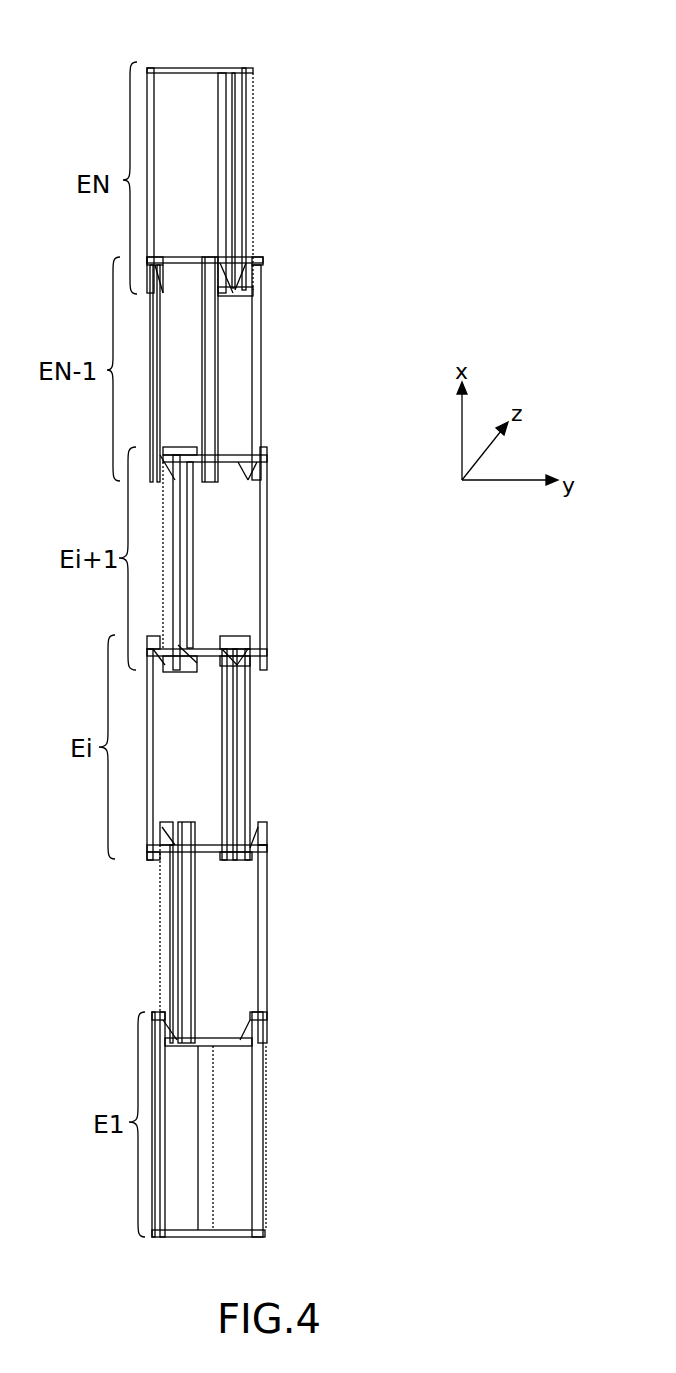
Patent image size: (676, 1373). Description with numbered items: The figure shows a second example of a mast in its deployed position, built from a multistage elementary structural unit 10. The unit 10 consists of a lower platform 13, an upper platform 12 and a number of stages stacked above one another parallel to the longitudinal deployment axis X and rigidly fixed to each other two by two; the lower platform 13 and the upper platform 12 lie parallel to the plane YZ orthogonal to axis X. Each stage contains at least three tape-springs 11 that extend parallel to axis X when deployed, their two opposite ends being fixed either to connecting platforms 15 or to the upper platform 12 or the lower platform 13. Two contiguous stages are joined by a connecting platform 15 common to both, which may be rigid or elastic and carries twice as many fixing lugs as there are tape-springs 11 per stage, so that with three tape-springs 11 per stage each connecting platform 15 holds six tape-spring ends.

The elementary structural unit 10 is at (313, 63).
The tape-spring 11 is at (247, 130).
The upper platform 12 is at (226, 68).
The lower platform 13 is at (248, 1237).
The connecting platform 15 is at (233, 457).